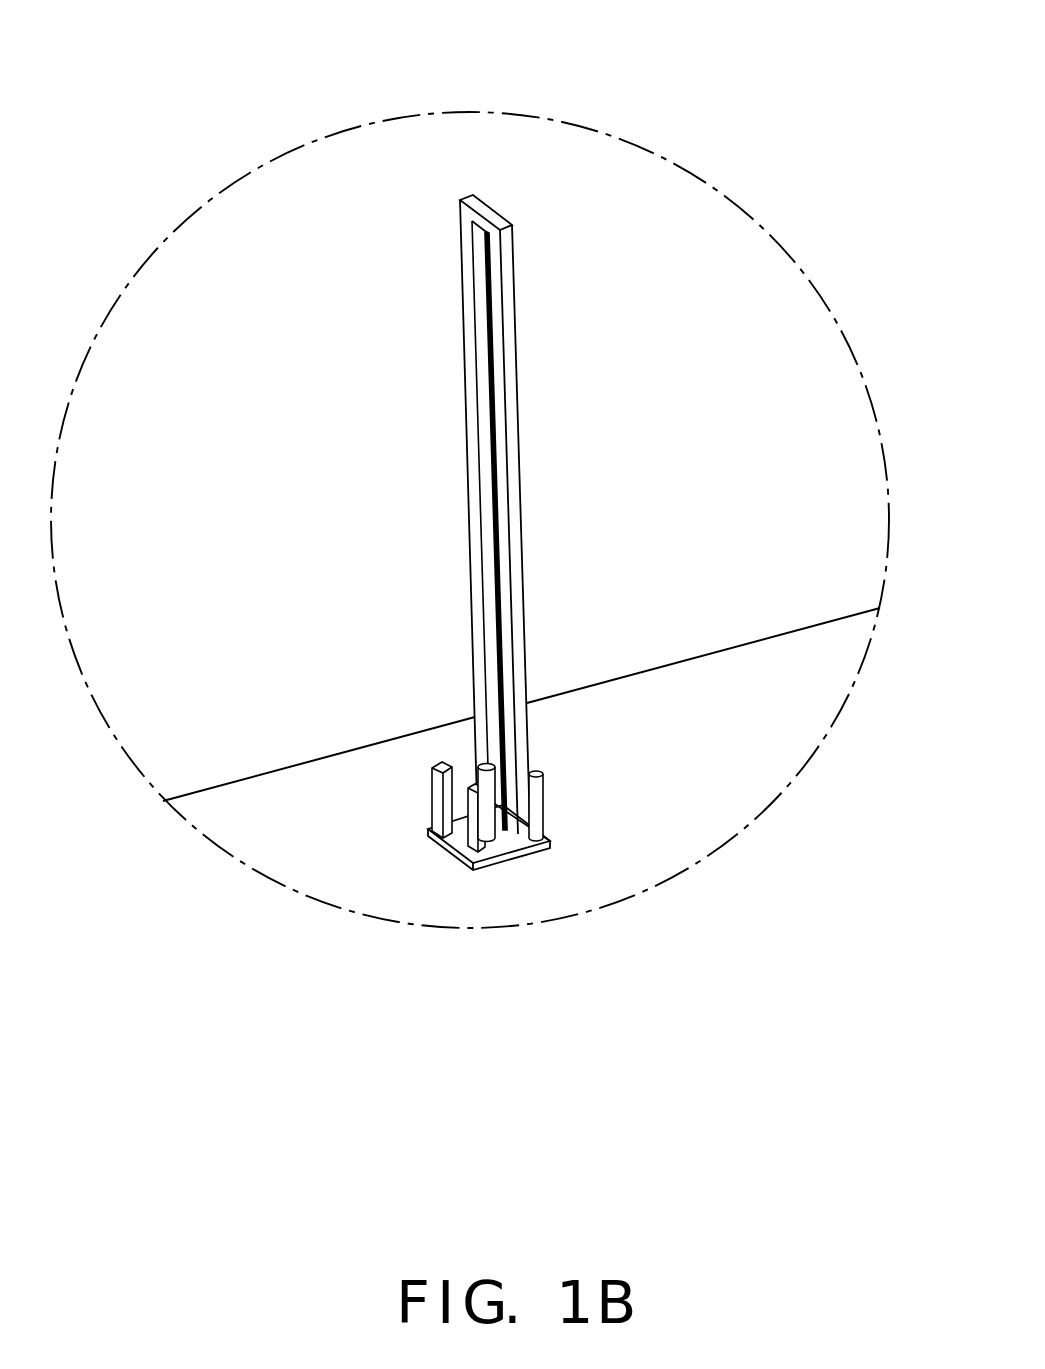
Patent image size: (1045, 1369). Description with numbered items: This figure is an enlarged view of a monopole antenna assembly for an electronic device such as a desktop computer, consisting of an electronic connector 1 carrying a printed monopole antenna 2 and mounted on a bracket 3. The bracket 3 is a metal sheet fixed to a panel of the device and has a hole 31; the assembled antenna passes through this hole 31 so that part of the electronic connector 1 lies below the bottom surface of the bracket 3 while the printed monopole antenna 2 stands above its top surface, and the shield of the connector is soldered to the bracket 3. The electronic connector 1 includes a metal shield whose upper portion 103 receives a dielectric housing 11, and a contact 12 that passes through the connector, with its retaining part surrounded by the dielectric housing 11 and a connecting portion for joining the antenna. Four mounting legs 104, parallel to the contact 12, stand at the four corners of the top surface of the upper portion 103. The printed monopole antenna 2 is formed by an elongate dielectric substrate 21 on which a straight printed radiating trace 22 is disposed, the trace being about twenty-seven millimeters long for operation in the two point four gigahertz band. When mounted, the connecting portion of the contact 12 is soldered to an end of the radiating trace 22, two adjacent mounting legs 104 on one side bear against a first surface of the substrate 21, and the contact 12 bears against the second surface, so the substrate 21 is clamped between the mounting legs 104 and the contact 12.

The electronic connector 1 is at (562, 939).
The dielectric housing 11 is at (502, 850).
The contact 12 is at (549, 846).
The upper portion 103 is at (463, 863).
The mounting legs 104 is at (434, 856).
The hole 31 is at (510, 850).
The printed monopole antenna 2 is at (604, 419).
The elongate dielectric substrate 21 is at (492, 258).
The printed radiating trace 22 is at (477, 233).
The bracket 3 is at (298, 828).